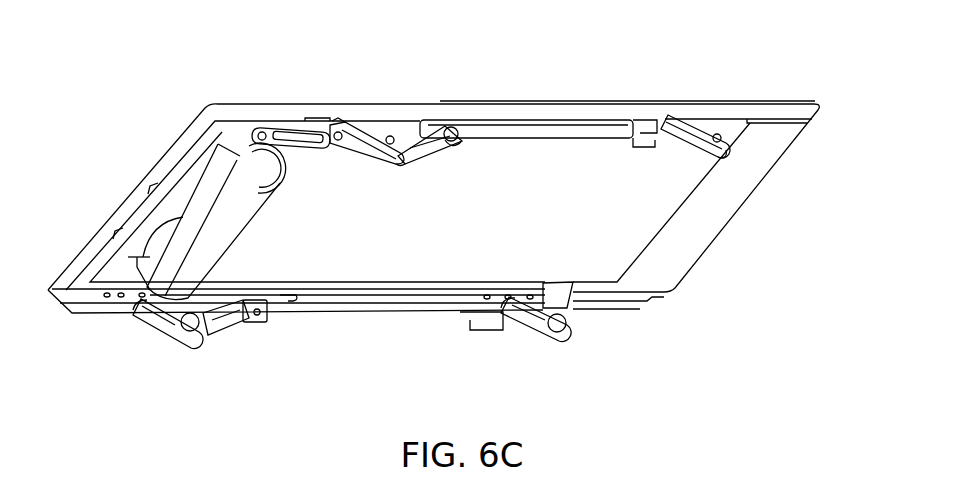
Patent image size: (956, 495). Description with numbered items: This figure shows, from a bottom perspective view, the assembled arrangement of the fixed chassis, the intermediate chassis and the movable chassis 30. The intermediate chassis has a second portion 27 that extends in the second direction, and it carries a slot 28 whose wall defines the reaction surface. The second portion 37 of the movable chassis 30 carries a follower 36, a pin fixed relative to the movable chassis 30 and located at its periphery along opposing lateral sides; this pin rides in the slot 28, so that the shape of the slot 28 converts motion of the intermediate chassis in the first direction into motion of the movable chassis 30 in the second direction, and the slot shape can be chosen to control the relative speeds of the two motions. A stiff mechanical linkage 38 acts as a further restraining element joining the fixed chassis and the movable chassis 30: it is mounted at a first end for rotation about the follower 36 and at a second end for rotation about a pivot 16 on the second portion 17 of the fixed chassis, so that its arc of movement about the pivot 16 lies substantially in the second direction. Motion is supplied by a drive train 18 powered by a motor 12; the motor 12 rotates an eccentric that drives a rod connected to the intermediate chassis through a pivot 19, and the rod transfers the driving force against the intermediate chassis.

The motor 12 is at (252, 200).
The pivot 16 is at (462, 135).
The second portion of the fixed chassis 17 is at (458, 148).
The drive train 18 is at (270, 128).
The pivot 19 is at (336, 132).
The second portion 27 is at (362, 148).
The slot 28 is at (340, 121).
The movable chassis 30 is at (540, 104).
The follower 36 is at (398, 165).
The second portion of the movable chassis 37 is at (404, 133).
The mechanical linkage 38 is at (440, 150).